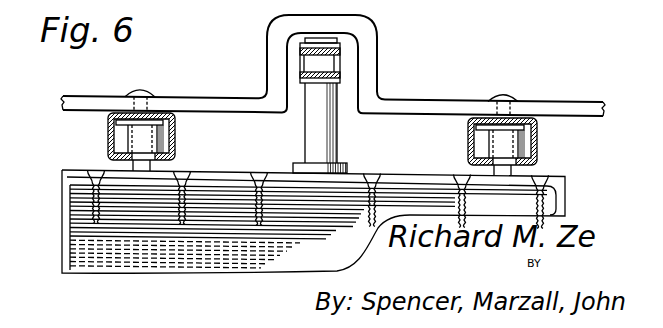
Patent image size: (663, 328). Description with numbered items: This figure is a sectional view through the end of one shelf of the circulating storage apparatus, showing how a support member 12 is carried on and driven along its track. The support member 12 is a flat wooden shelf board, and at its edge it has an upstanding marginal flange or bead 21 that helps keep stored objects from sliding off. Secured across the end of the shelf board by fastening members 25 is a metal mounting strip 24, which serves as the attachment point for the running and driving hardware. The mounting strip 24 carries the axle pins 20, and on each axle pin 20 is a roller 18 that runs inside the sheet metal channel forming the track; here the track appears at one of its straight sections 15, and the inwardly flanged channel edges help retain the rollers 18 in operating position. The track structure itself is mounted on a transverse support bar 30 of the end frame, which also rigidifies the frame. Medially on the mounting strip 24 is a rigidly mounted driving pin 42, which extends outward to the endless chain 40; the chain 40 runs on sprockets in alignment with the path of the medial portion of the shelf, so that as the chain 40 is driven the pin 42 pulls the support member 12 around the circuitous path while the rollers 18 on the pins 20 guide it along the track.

The support member 12 is at (143, 274).
The straight section 15 is at (175, 135).
The roller 18 is at (125, 138).
The axle pin 20 is at (140, 158).
The marginal flange 21 is at (63, 215).
The mounting strip 24 is at (568, 180).
The fastening member 25 is at (233, 227).
The support bar 30 is at (232, 89).
The endless chain 40 is at (340, 61).
The driving pin 42 is at (332, 142).